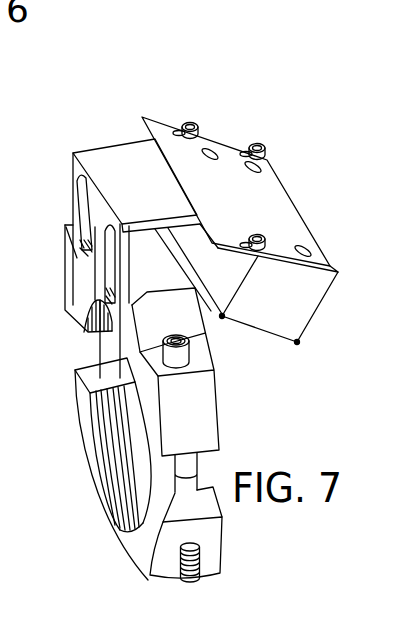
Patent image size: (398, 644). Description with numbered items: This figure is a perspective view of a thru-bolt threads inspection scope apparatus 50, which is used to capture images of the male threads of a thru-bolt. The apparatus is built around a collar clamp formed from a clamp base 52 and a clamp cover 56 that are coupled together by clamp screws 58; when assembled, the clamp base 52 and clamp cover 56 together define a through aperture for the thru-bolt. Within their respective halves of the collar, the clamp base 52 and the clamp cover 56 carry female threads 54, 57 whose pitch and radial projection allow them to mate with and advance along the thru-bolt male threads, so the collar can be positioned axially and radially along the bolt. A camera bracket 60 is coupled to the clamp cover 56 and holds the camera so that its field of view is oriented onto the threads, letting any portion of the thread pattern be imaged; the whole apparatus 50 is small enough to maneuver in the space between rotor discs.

The inspection scope apparatus 50 is at (221, 66).
The clamp base 52 is at (140, 560).
The female threads 54 is at (120, 473).
The clamp cover 56 is at (198, 412).
The female threads 57 is at (80, 322).
The clamp screws 58 is at (188, 353).
The camera bracket 60 is at (118, 173).